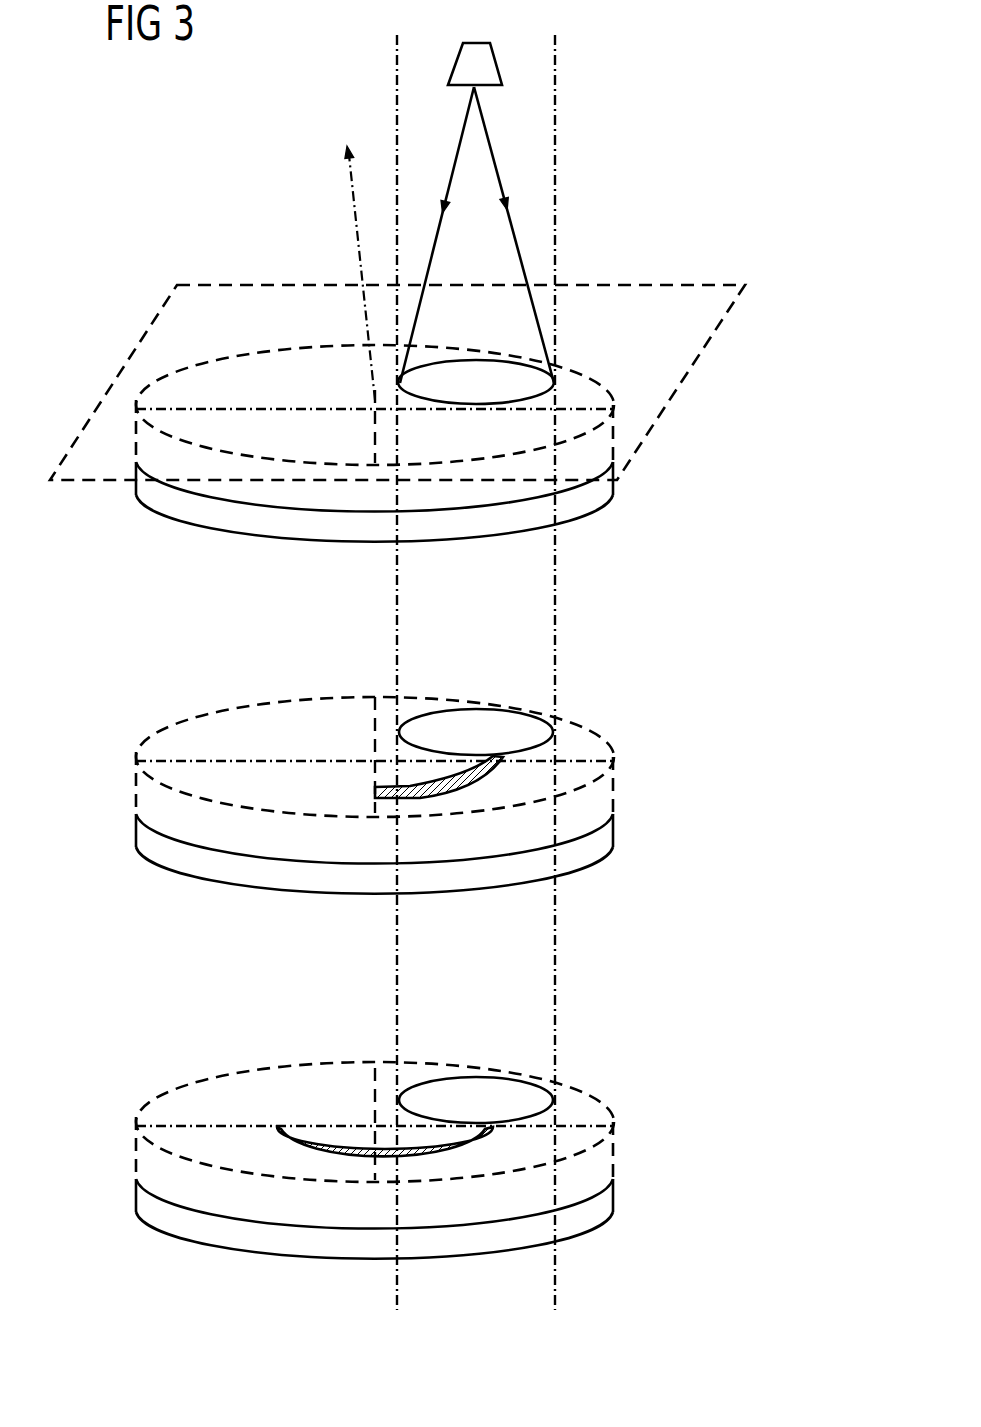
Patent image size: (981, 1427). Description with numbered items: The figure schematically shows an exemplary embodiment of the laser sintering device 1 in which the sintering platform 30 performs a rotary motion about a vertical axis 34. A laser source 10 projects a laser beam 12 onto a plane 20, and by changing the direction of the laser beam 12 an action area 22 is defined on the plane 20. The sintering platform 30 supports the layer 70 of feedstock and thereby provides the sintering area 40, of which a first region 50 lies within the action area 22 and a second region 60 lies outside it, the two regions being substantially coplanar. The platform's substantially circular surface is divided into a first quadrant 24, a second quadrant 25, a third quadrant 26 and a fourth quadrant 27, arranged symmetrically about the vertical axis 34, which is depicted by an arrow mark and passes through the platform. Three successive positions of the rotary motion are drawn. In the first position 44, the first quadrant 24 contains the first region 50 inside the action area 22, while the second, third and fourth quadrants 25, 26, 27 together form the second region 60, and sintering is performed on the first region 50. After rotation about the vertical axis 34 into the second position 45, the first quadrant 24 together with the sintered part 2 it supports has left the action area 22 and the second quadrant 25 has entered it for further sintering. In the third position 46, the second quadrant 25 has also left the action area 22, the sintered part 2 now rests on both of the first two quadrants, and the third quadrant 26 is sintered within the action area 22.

The laser sintering device 1 is at (326, 263).
The sintered part 2 is at (417, 797).
The laser source 10 is at (483, 65).
The laser beam 12 is at (466, 114).
The plane 20 is at (710, 343).
The action area 22 is at (486, 350).
The first quadrant 24 is at (590, 388).
The second quadrant 25 is at (315, 378).
The third quadrant 26 is at (322, 440).
The fourth quadrant 27 is at (465, 447).
The sintering platform 30 is at (592, 493).
The vertical axis 34 is at (348, 185).
The sintering area 40 is at (613, 372).
The first position 44 is at (668, 238).
The second position 45 is at (688, 655).
The third position 46 is at (692, 1015).
The first region 50 is at (449, 380).
The second region 60 is at (223, 395).
The layer of feedstock 70 is at (150, 447).